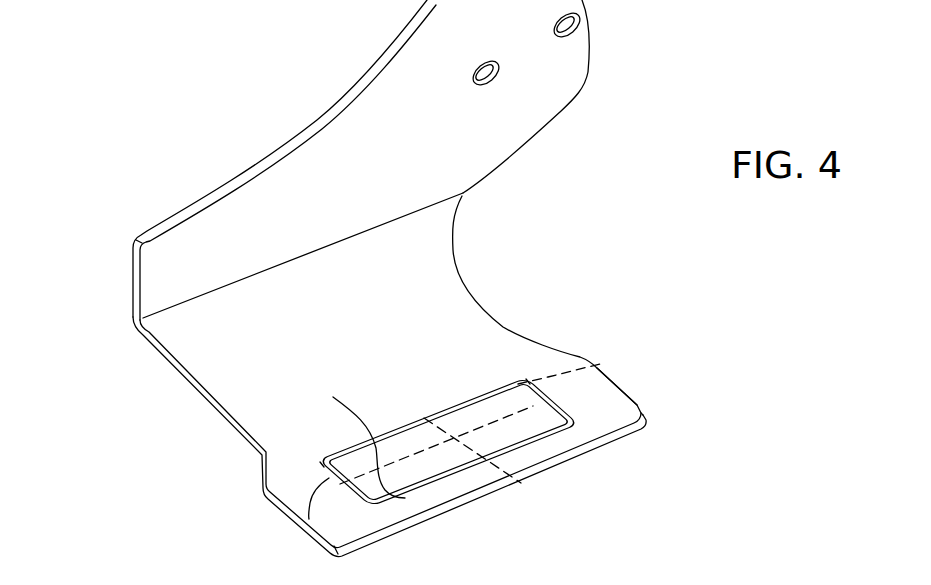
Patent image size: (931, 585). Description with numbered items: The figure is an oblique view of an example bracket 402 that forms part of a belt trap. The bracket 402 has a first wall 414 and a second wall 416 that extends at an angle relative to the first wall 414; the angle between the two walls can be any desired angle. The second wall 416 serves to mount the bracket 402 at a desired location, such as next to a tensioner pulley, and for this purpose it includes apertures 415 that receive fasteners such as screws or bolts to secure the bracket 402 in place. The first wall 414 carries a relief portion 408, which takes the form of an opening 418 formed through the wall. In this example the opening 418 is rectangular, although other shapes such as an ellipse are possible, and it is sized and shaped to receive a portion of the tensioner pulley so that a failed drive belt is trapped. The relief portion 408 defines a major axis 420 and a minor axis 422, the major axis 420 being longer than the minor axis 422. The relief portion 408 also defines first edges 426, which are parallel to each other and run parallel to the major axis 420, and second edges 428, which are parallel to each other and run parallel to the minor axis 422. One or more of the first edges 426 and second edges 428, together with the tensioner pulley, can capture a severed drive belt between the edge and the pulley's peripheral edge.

The bracket 402 is at (172, 108).
The first wall 414 is at (182, 365).
The second wall 416 is at (318, 126).
The apertures 415 is at (499, 79).
The relief portion 408 is at (462, 400).
The opening 418 is at (466, 378).
The major axis 420 is at (600, 364).
The minor axis 422 is at (521, 483).
The first edges 426 is at (383, 430).
The second edges 428 is at (620, 390).